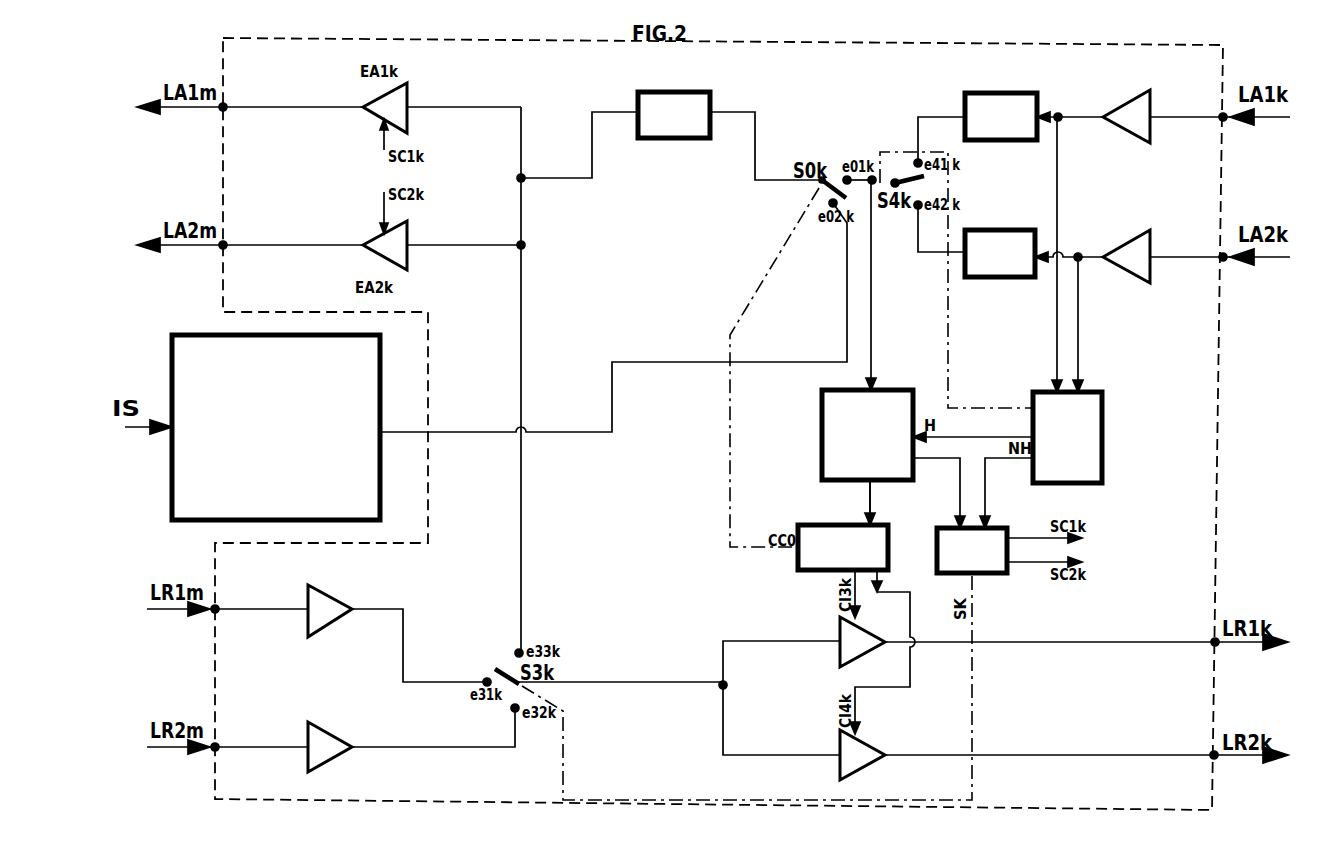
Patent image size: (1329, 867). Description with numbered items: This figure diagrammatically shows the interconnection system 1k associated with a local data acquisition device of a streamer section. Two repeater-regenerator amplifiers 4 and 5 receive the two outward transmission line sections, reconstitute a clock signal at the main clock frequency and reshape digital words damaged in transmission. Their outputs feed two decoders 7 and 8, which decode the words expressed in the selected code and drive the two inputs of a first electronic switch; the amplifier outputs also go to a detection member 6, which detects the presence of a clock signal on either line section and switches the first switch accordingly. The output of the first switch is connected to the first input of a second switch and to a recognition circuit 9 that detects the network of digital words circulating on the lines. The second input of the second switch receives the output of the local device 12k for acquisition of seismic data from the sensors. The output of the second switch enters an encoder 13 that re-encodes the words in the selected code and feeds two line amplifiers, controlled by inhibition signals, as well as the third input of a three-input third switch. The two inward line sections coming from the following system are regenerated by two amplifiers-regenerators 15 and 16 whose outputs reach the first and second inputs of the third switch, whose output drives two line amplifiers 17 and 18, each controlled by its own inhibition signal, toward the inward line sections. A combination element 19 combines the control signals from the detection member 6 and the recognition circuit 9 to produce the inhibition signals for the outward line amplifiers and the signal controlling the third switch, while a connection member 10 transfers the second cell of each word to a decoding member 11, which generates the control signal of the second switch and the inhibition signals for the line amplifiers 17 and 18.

The interconnection system 1k is at (1217, 498).
The repeater-regenerator amplifier 4 is at (1134, 96).
The repeater-regenerator amplifier 5 is at (1133, 236).
The detection member 6 is at (1104, 392).
The decoder 7 is at (1008, 93).
The decoder 8 is at (1008, 230).
The recognition circuit 9 is at (822, 427).
The connection member 10 is at (870, 505).
The decoding member 11 is at (798, 525).
The local device for acquisition of seismic data 12k is at (210, 335).
The encoder 13 is at (640, 92).
The amplifier-regenerator 15 is at (308, 628).
The amplifier-regenerator 16 is at (308, 723).
The line amplifier 17 is at (840, 658).
The line amplifier 18 is at (840, 739).
The combination element 19 is at (1007, 528).